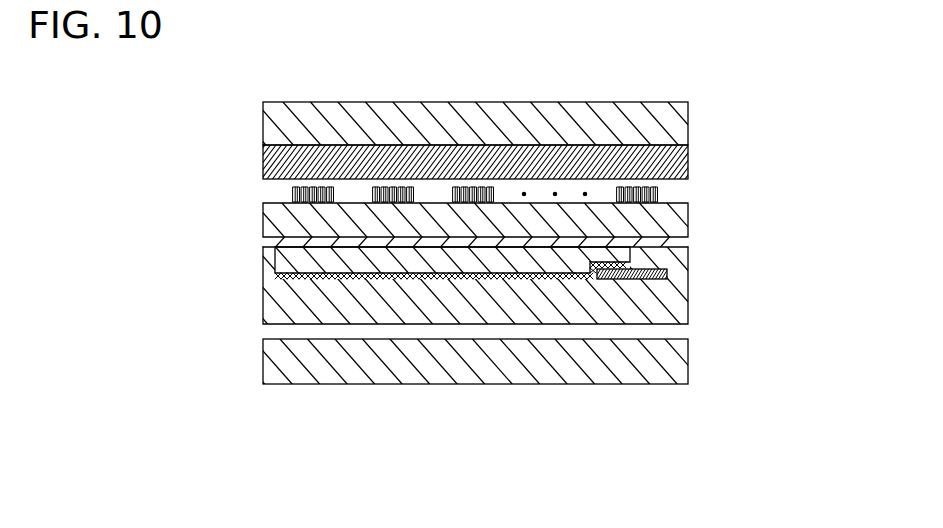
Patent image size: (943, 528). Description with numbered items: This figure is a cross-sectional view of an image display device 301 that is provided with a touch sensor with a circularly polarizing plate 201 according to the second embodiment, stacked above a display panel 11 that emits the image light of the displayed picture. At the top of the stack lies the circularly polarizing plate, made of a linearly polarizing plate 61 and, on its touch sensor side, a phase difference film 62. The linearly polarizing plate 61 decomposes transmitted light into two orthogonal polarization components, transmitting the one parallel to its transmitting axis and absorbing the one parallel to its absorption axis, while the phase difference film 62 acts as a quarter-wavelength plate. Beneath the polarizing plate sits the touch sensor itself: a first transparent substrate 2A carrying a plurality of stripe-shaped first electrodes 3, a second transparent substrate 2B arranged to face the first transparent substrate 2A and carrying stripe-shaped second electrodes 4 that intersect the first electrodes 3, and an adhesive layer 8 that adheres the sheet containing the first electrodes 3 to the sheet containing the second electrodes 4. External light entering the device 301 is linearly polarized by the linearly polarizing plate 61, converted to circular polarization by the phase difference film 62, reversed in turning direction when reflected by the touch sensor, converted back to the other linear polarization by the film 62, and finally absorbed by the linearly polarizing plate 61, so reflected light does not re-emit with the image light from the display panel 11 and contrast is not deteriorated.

The display device 301 is at (226, 127).
The touch sensor with a circularly polarizing plate 201 is at (752, 100).
The linearly polarizing plate 61 is at (650, 121).
The phase difference film 62 is at (653, 159).
The first electrodes 3 is at (657, 190).
The first transparent substrate 2A is at (683, 217).
The adhesive layer 8 is at (680, 243).
The second transparent substrate 2B is at (677, 305).
The second electrodes 4 is at (668, 273).
The display panel 11 is at (648, 358).